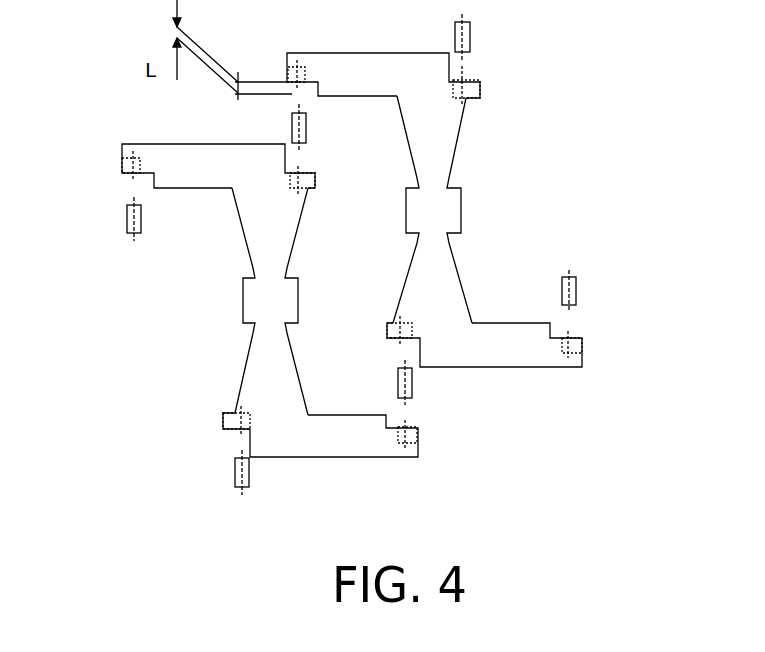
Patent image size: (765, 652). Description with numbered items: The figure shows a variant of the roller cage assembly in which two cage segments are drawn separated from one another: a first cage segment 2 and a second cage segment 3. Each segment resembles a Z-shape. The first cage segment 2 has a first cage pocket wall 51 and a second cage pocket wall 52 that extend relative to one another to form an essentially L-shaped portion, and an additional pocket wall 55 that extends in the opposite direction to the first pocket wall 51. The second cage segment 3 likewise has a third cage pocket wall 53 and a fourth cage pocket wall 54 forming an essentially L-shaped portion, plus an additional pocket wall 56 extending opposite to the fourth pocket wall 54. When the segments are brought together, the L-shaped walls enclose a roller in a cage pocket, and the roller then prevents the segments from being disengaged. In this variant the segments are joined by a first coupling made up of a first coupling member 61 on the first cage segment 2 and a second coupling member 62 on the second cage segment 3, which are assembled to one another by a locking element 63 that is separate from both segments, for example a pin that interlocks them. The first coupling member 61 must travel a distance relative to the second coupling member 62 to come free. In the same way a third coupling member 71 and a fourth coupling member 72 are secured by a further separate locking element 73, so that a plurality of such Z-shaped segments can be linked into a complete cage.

The first cage segment 2 is at (373, 67).
The second cage segment 3 is at (328, 437).
The first cage pocket wall 51 is at (412, 150).
The second cage pocket wall 52 is at (358, 96).
The third cage pocket wall 53 is at (300, 228).
The fourth cage pocket wall 54 is at (343, 413).
The additional pocket wall 55 is at (507, 323).
The additional pocket wall 56 is at (192, 188).
The first coupling member 61 is at (288, 75).
The second coupling member 62 is at (468, 88).
The locking element 63 is at (472, 38).
The third coupling member 71 is at (393, 326).
The fourth coupling member 72 is at (582, 342).
The locking element 73 is at (578, 291).